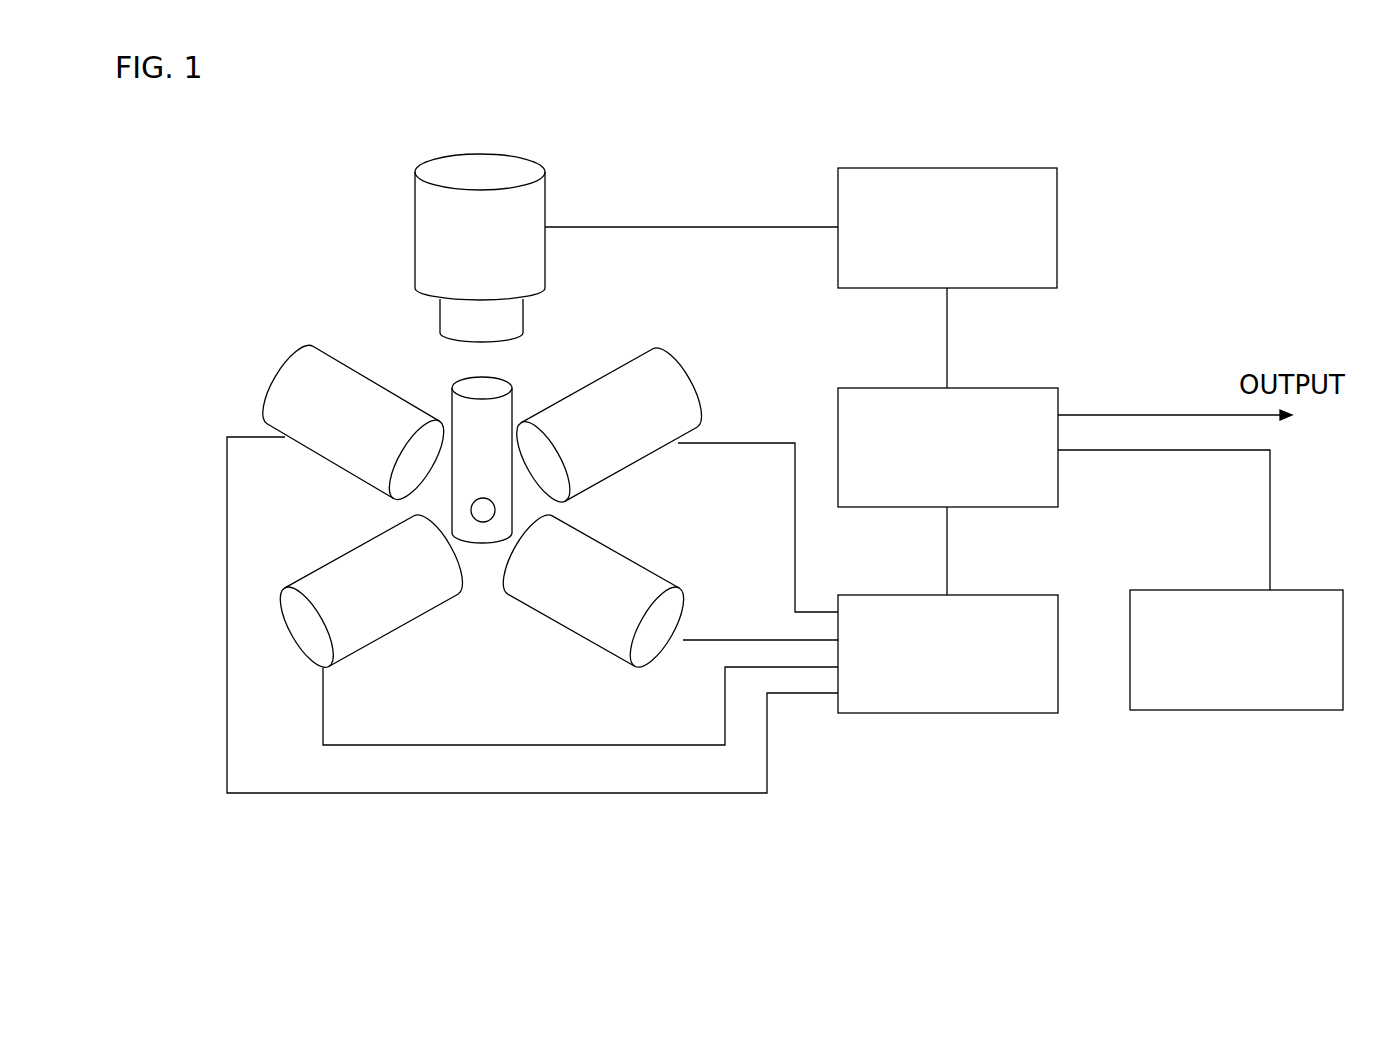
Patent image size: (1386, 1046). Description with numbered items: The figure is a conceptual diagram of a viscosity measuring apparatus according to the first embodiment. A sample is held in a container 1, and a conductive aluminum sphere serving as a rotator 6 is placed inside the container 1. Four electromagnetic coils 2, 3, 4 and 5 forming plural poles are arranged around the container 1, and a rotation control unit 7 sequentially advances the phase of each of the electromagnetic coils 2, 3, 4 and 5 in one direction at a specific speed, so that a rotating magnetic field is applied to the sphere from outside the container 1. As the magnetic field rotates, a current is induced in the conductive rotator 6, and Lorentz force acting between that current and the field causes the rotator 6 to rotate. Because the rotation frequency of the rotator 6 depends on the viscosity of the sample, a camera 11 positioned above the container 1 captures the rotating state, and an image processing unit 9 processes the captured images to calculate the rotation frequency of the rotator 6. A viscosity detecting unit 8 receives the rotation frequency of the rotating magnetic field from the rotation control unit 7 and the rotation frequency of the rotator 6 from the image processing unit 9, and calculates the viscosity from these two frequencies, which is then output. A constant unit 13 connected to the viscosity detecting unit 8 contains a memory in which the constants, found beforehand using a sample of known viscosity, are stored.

The container 1 is at (463, 383).
The electromagnetic coil 2 is at (290, 380).
The electromagnetic coil 3 is at (302, 583).
The electromagnetic coil 4 is at (618, 627).
The electromagnetic coil 5 is at (658, 367).
The rotator 6 is at (473, 514).
The rotation control unit 7 is at (1015, 595).
The viscosity detecting unit 8 is at (997, 388).
The image processing unit 9 is at (973, 168).
The camera 11 is at (440, 162).
The constant unit 13 is at (1225, 710).